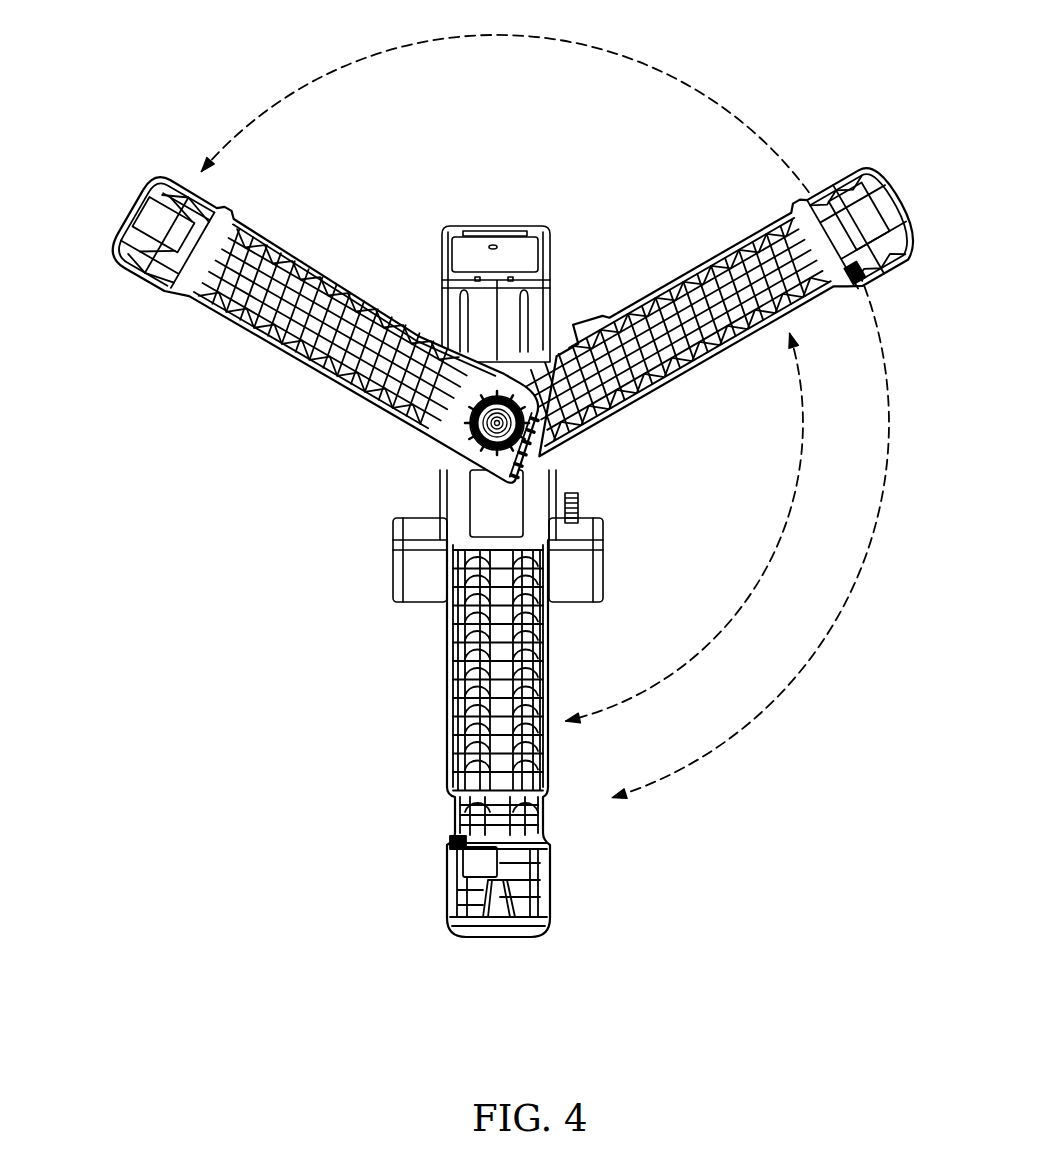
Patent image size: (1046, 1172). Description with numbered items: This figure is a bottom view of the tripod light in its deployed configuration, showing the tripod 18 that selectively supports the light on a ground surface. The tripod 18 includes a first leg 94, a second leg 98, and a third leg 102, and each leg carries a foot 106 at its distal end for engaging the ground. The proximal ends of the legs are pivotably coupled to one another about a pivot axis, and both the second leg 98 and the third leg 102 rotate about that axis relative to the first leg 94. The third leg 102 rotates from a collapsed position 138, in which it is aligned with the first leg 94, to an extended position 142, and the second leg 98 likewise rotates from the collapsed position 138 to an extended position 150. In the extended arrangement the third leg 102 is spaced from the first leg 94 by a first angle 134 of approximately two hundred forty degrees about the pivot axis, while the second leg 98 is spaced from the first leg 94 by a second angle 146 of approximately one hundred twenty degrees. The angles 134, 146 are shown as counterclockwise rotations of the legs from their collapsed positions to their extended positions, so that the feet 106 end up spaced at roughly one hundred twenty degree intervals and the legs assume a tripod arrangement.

The tripod 18 is at (236, 665).
The first leg 94 is at (460, 687).
The second leg 98 is at (698, 270).
The third leg 102 is at (262, 333).
The foot 106 is at (130, 255).
The first angle 134 is at (836, 608).
The collapsed position 138 is at (498, 962).
The extended position of the third leg 142 is at (122, 190).
The second angle 146 is at (758, 576).
The extended position of the second leg 150 is at (922, 195).